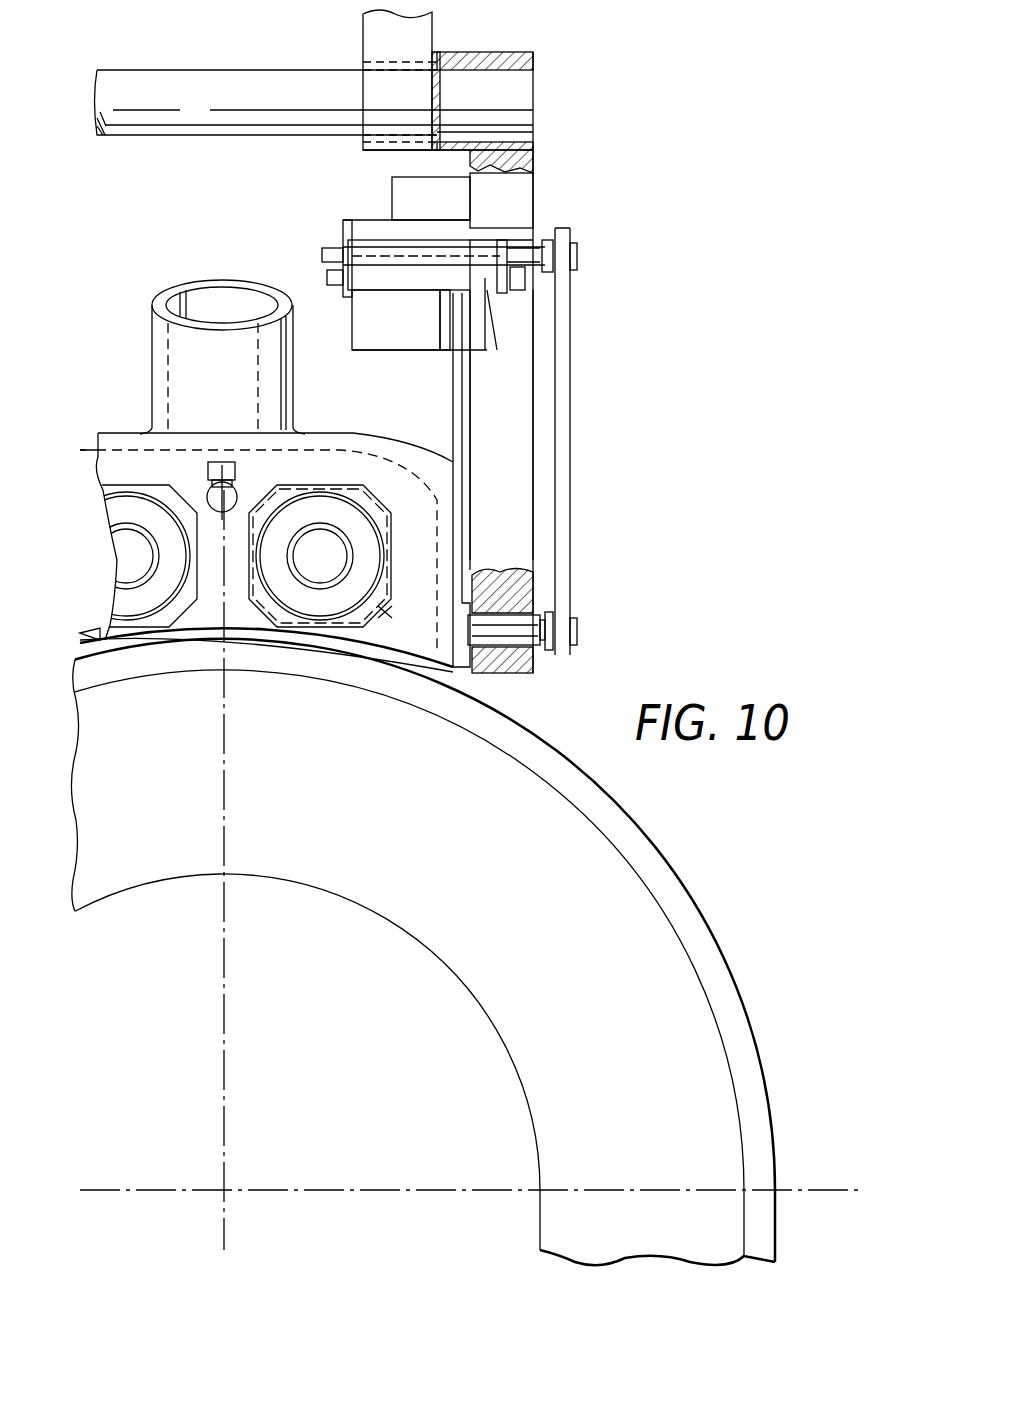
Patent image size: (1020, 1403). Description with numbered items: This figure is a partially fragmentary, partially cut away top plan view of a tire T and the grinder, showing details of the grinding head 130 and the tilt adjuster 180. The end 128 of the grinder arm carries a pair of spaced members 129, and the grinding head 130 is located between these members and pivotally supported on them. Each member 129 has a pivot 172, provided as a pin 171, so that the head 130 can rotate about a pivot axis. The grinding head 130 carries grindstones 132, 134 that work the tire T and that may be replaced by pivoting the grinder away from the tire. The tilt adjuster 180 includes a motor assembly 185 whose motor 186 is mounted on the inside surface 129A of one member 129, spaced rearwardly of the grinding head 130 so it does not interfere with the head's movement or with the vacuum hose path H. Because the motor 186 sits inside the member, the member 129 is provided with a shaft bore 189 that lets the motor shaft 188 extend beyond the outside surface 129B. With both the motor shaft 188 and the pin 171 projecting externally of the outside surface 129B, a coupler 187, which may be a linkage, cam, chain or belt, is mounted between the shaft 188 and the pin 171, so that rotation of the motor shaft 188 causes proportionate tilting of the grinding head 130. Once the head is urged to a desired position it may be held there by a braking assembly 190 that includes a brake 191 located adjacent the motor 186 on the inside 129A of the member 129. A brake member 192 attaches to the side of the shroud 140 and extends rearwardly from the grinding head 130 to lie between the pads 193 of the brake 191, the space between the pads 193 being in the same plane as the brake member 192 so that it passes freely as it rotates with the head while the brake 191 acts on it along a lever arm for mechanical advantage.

The end 128 is at (535, 103).
The tilt adjuster 180 is at (380, 180).
The motor assembly 185 is at (350, 216).
The motor 186 is at (343, 252).
The shaft bore 189 is at (530, 250).
The motor shaft 188 is at (547, 262).
The coupler 187 is at (572, 546).
The braking assembly 190 is at (380, 315).
The brake 191 is at (385, 348).
The pad 193 is at (446, 352).
The brake member 192 is at (462, 432).
The member 129 is at (520, 483).
The inside surface 129A is at (478, 452).
The outside surface 129B is at (540, 510).
The pin 171 is at (500, 630).
The pivot 172 is at (580, 630).
The shroud 140 is at (150, 372).
The hose's path H is at (178, 300).
The grinding head 130 is at (140, 425).
The grindstone 132 is at (104, 456).
The grindstone 134 is at (385, 615).
The tire T is at (705, 935).